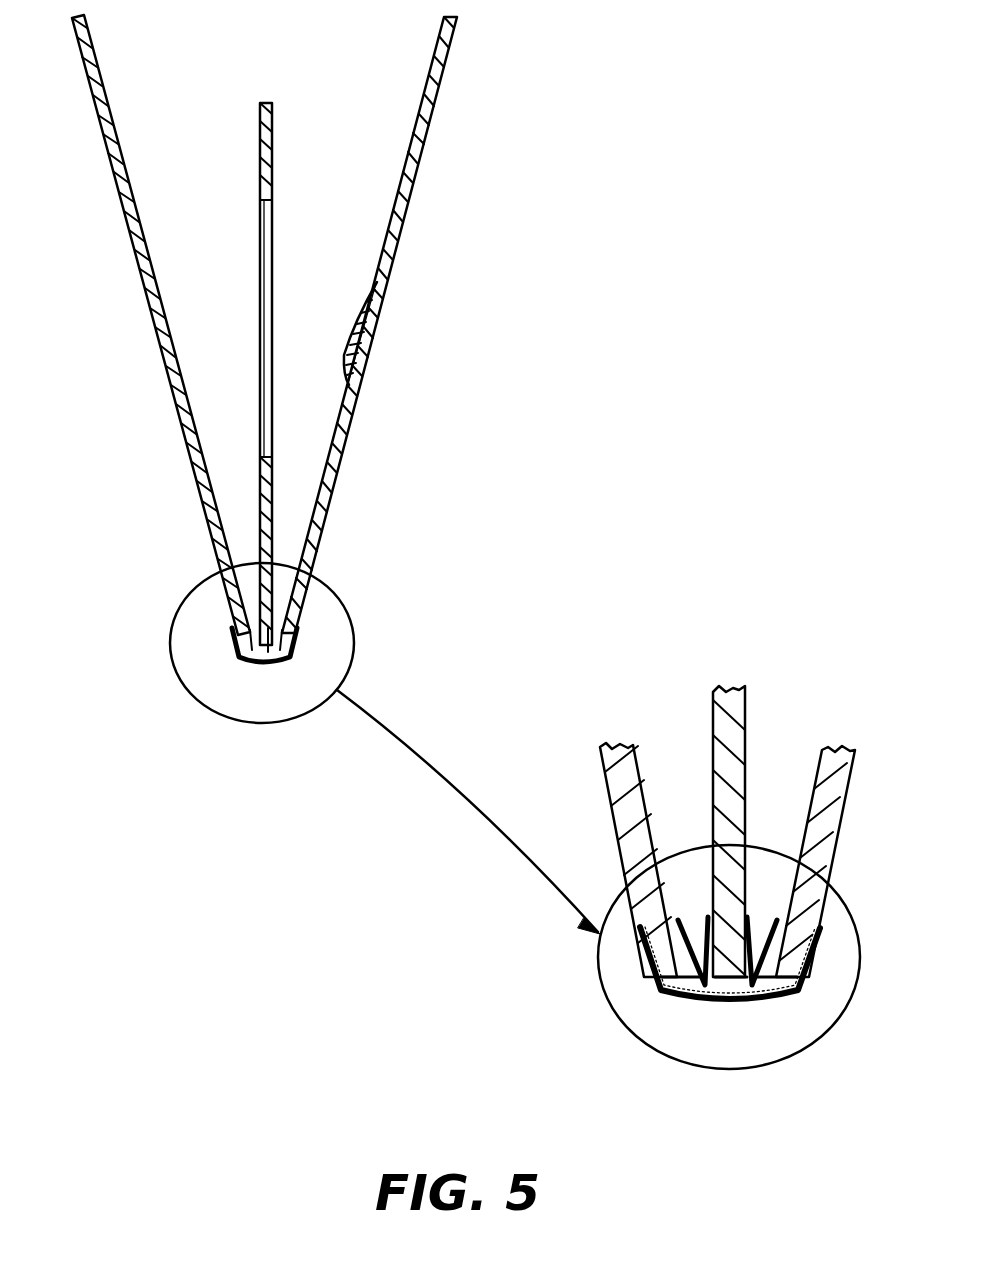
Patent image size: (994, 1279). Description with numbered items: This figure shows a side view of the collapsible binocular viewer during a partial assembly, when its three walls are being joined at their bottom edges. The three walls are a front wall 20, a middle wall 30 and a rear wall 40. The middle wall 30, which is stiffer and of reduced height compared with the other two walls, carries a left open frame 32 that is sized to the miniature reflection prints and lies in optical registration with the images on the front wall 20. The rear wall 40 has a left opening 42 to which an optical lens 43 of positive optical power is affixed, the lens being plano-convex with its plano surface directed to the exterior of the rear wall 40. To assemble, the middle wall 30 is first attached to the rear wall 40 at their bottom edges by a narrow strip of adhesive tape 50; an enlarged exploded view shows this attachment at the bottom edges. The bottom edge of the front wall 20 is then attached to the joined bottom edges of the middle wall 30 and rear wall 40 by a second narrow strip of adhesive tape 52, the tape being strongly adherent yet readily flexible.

The front wall 20 is at (122, 212).
The middle wall 30 is at (272, 128).
The left open frame 32 is at (262, 297).
The rear wall 40 is at (410, 208).
The left opening 42 is at (358, 385).
The optical lens 43 is at (362, 305).
The adhesive tape 50 is at (758, 885).
The adhesive tape 52 is at (756, 1005).